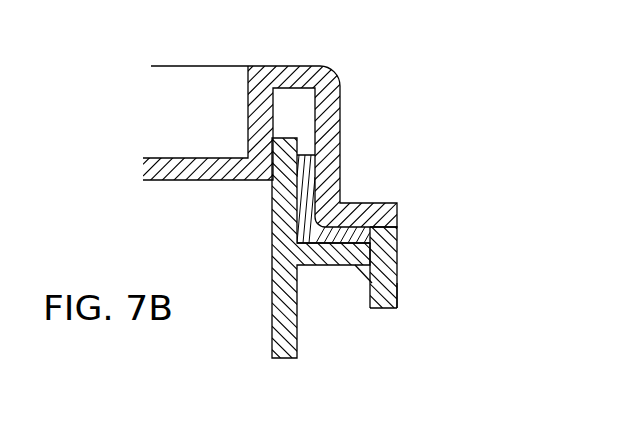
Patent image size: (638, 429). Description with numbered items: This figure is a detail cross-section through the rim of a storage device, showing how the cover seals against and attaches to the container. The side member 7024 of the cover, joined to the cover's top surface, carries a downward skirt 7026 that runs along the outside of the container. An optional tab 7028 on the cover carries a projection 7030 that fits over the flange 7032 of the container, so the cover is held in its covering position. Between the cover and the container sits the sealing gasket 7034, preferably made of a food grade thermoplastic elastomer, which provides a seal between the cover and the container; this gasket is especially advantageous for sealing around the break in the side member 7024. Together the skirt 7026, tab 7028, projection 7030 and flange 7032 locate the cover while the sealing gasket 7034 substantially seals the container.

The side member 7024 is at (362, 132).
The skirt 7026 is at (397, 224).
The tab 7028 is at (397, 286).
The projection 7030 is at (363, 278).
The flange 7032 is at (324, 275).
The sealing gasket 7034 is at (352, 226).